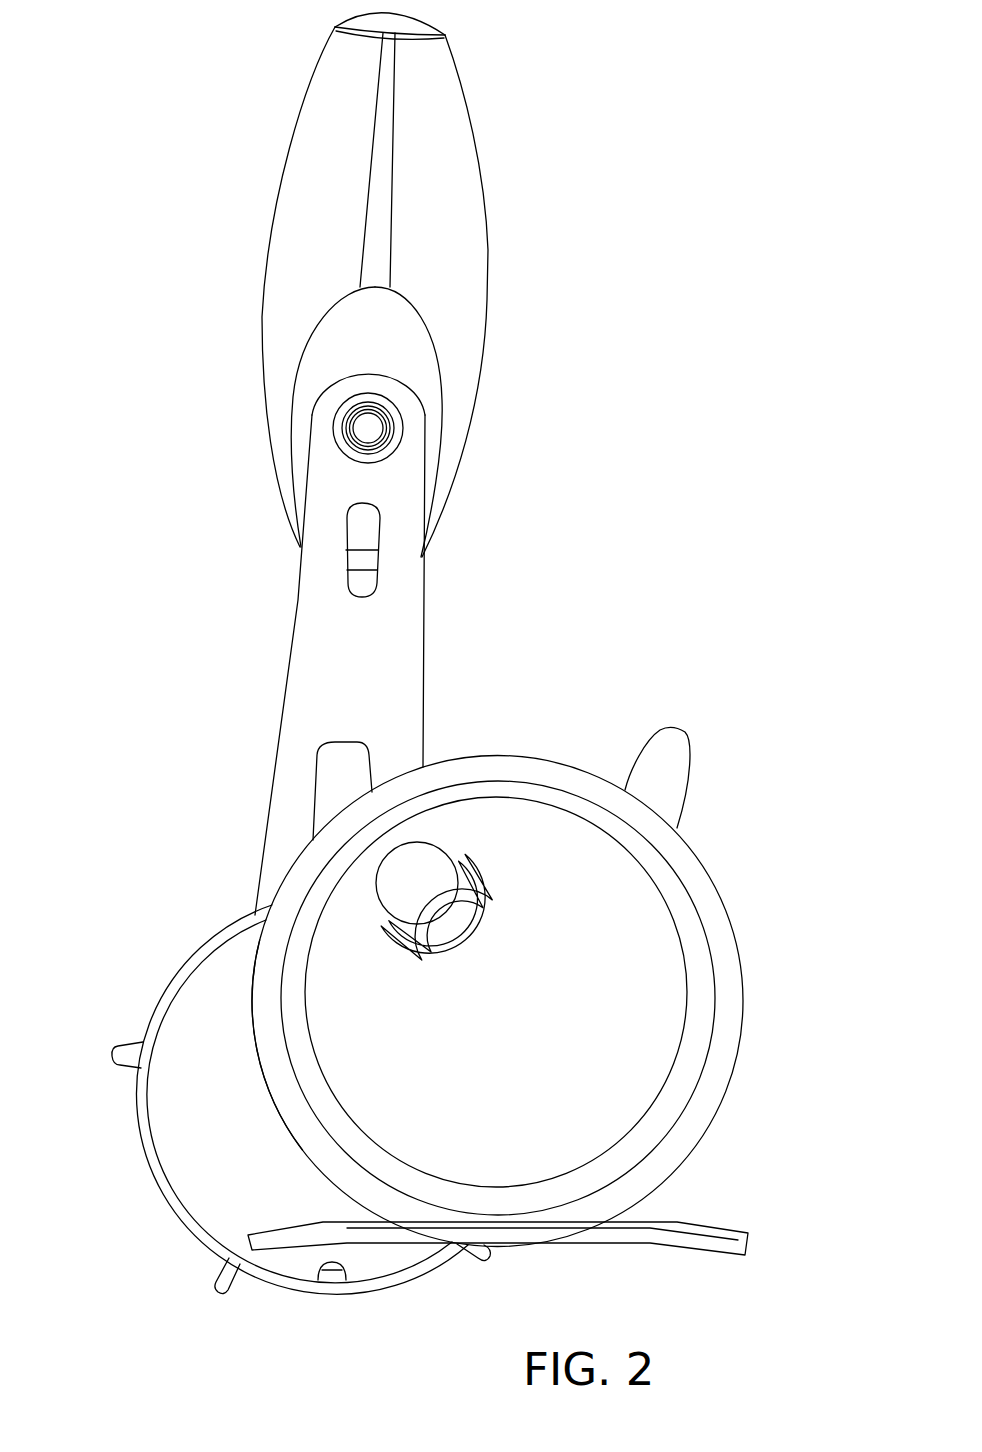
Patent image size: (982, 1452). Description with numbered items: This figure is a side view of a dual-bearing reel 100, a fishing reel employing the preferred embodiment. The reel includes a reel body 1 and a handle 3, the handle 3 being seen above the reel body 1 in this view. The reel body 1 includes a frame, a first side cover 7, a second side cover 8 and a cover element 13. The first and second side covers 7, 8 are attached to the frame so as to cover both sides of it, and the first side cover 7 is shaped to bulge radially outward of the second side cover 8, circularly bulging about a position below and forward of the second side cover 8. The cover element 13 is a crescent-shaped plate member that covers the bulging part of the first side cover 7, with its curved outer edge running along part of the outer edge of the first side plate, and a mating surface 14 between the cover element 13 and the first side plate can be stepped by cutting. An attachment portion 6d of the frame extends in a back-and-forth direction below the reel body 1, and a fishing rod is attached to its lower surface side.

The dual-bearing reel 100 is at (207, 693).
The handle 3 is at (522, 310).
The reel body 1 is at (585, 742).
The second side cover 8 is at (707, 868).
The first side cover 7 is at (223, 933).
The cover element 13 is at (203, 1032).
The mating surface 14 is at (277, 1102).
The attachment portion 6d is at (700, 1222).